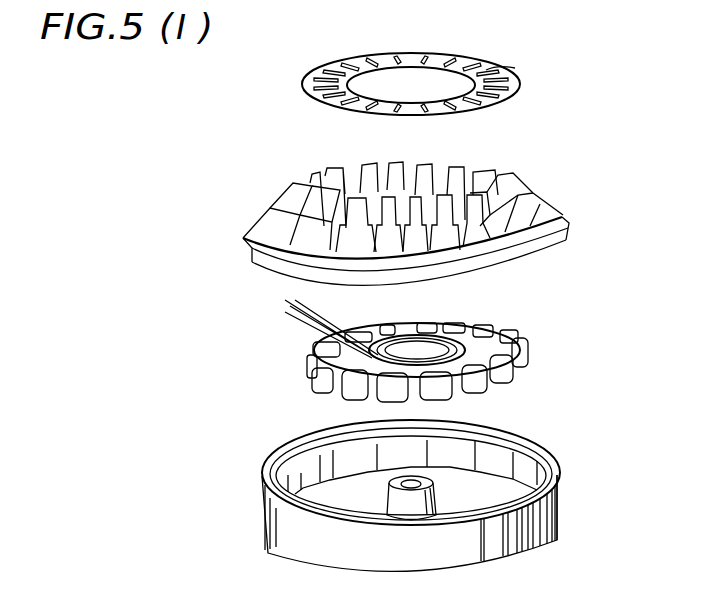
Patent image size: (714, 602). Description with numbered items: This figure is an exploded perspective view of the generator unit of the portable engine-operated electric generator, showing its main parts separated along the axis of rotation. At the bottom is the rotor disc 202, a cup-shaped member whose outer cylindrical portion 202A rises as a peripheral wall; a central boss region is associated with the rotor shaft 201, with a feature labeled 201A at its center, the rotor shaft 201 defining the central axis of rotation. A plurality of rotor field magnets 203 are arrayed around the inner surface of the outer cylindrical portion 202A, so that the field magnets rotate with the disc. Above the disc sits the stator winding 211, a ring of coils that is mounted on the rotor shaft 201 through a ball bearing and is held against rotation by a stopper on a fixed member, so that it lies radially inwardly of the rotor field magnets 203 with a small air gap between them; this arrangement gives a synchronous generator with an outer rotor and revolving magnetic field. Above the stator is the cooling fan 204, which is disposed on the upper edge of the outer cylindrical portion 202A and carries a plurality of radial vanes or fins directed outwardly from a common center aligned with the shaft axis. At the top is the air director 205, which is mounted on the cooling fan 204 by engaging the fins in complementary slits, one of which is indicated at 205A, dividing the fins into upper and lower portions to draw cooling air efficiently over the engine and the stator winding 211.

The air director 205 is at (318, 80).
The slot of spring washer 205A is at (505, 73).
The cooling fan 204 is at (545, 208).
The stator winding 211 is at (502, 335).
The rotor field magnets 203 is at (303, 477).
The rotor shaft 201 is at (437, 502).
The shaft hole 201A is at (415, 481).
The rotor disc 202 is at (505, 528).
The outer cylindrical portion 202A is at (558, 507).